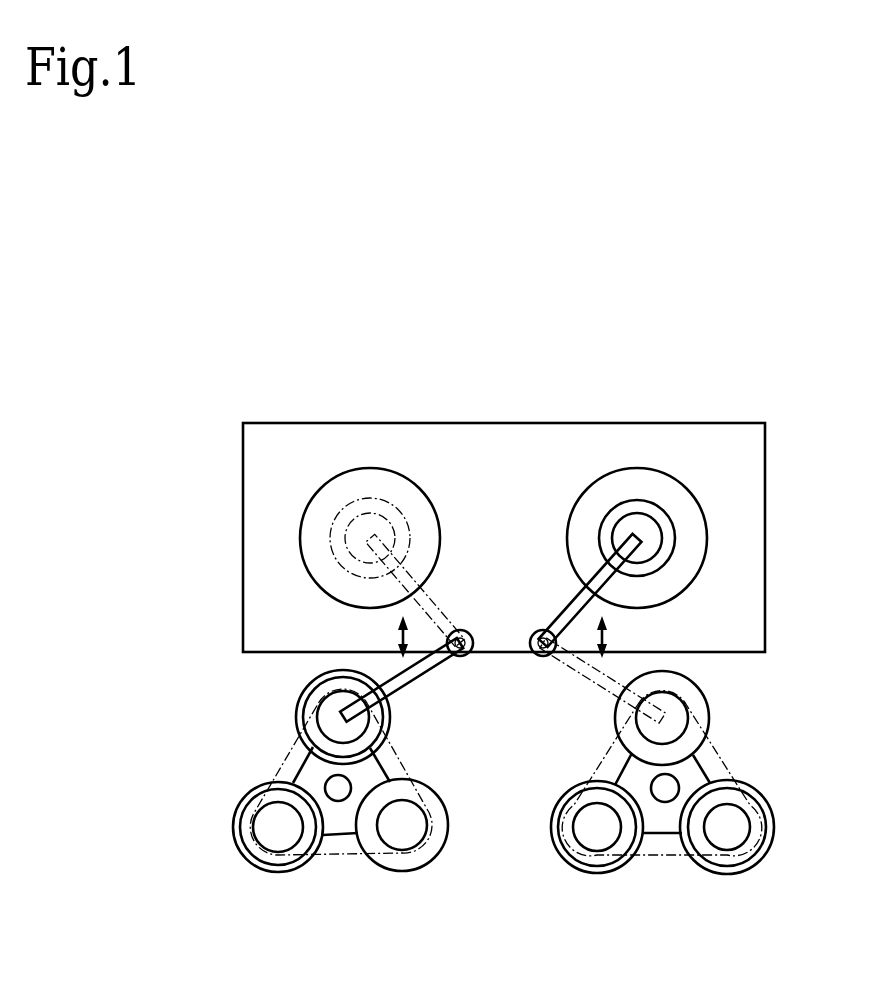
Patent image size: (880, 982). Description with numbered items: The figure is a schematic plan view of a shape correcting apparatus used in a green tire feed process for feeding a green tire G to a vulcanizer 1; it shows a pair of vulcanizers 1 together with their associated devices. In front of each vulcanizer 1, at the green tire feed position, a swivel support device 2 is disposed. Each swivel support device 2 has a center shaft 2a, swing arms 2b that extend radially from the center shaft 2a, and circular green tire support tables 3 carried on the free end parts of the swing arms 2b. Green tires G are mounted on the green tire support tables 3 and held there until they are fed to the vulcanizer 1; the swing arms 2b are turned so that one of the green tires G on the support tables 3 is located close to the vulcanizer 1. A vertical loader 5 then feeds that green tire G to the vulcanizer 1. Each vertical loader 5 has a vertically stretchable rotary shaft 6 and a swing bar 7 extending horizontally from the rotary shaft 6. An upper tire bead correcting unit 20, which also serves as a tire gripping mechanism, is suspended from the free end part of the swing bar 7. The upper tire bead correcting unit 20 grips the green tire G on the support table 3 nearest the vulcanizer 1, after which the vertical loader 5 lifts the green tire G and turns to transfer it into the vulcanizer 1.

The vulcanizer 1 is at (365, 456).
The green tire G is at (658, 518).
The upper tire bead correcting unit 20 is at (653, 542).
The green tire support table 3 is at (247, 863).
The swivel support device 2 is at (342, 852).
The center shaft 2a is at (335, 785).
The swing arm 2b is at (380, 737).
The rotary shaft 6 is at (463, 630).
The swing bar 7 is at (393, 693).
The vertical loader 5 is at (429, 675).